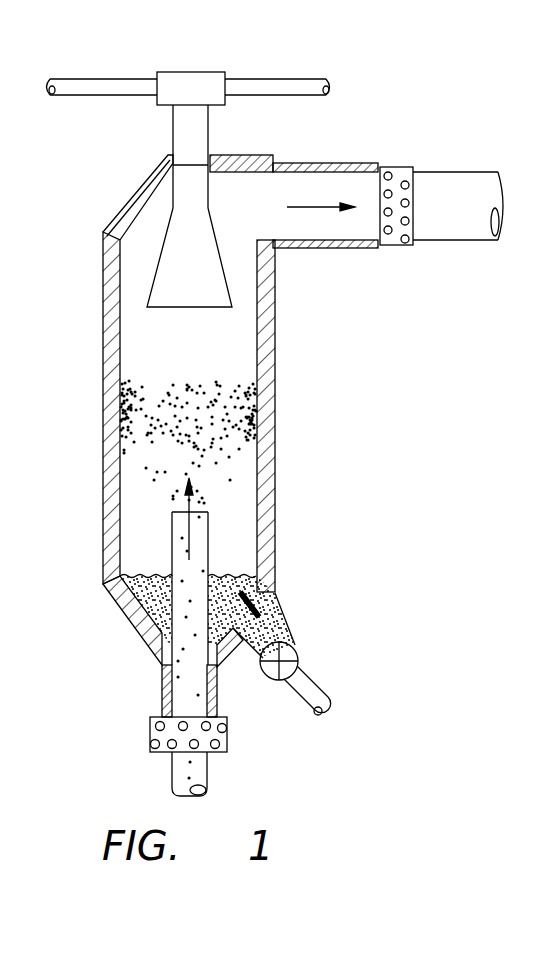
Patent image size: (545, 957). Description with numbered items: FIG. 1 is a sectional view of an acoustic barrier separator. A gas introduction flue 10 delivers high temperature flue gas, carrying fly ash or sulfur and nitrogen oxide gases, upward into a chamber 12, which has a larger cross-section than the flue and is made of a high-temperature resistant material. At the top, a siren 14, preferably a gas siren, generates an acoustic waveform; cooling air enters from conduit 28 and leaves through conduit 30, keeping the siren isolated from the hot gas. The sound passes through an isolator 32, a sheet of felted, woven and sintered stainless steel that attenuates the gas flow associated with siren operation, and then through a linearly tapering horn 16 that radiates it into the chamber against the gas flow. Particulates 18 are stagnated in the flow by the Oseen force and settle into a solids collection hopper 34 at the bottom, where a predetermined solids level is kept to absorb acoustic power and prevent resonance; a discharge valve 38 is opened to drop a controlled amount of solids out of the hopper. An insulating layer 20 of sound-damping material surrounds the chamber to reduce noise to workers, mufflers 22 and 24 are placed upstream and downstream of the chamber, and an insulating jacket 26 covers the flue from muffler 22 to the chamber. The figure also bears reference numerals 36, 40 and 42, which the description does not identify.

The gas introduction flue 10 is at (172, 770).
The chamber 12 is at (121, 333).
The siren 14 is at (167, 71).
The linearly tapering horn 16 is at (172, 143).
The particulates 18 is at (160, 422).
The insulating layer 20 is at (275, 347).
The muffler 22 is at (150, 733).
The muffler 24 is at (393, 247).
The insulating jacket 26 is at (162, 683).
The conduit 28 is at (260, 78).
The conduit 30 is at (78, 96).
The isolator 32 is at (188, 163).
The solids collection hopper 34 is at (128, 612).
The drain branch 36 is at (262, 597).
The discharge valve 38 is at (294, 646).
The outlet tube 40 is at (440, 171).
The duct bottom wall 42 is at (310, 249).